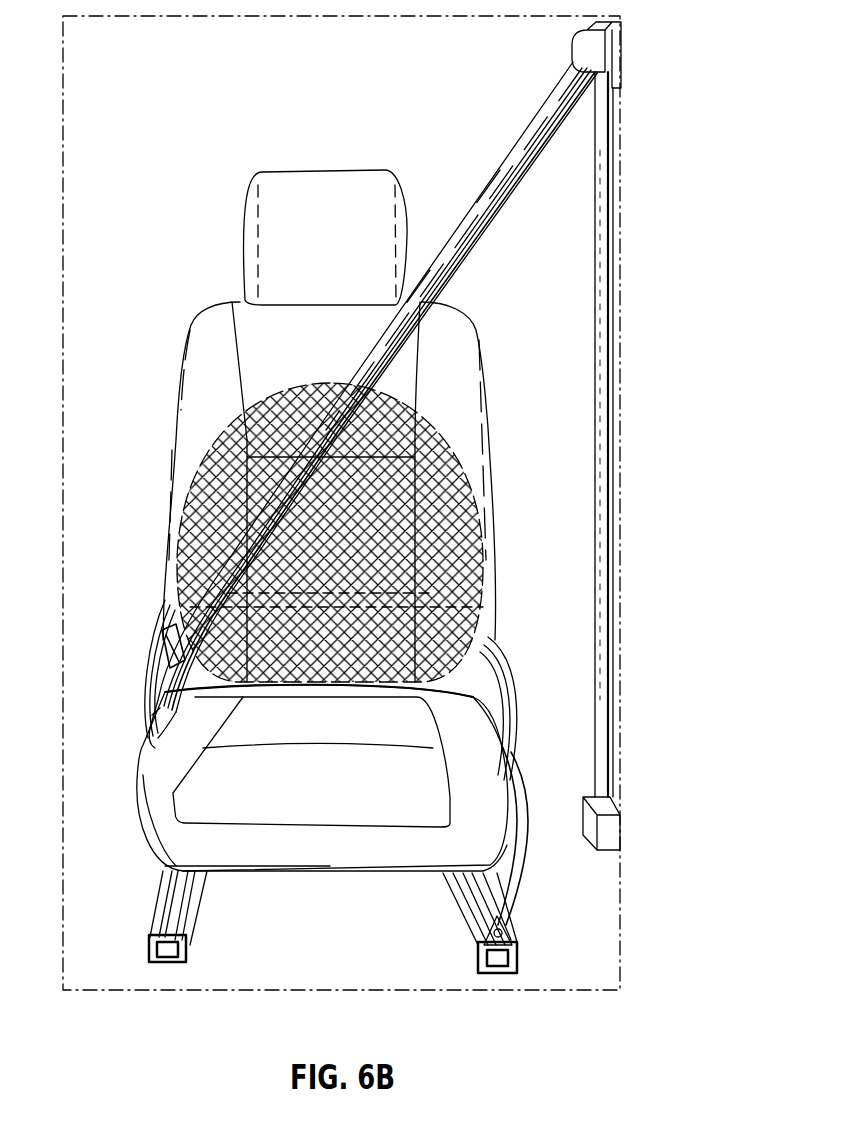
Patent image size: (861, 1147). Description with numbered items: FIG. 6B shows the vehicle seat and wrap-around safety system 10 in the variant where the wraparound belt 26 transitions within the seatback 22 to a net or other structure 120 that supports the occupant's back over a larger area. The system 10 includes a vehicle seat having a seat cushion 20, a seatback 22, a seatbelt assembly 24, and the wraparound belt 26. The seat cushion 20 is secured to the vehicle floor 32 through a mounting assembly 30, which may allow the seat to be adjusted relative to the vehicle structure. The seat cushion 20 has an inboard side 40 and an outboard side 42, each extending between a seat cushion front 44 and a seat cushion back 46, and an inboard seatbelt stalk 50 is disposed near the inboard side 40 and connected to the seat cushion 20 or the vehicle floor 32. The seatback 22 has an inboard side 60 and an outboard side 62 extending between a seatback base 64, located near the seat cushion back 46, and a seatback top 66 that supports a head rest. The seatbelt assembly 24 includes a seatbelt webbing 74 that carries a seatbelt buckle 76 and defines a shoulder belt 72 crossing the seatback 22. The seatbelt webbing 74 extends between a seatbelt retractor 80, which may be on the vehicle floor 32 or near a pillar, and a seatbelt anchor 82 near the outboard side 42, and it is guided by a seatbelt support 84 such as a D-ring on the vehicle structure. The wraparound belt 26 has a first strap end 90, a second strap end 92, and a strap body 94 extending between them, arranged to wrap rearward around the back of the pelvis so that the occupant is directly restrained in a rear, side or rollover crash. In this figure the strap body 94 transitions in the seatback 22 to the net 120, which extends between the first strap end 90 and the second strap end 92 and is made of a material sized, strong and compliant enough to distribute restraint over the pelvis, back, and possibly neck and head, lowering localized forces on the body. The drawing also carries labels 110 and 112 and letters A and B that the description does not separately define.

The vehicle seat and wrap-around safety system 10 is at (262, 130).
The seat cushion 20 is at (133, 829).
The seatback 22 is at (162, 367).
The seatbelt assembly 24 is at (530, 122).
The wraparound belt 26 is at (144, 651).
The mounting assembly 30 is at (148, 951).
The vehicle floor 32 is at (525, 970).
The inboard side 40 is at (142, 748).
The outboard side 42 is at (512, 772).
The seat cushion front 44 is at (297, 855).
The seat cushion back 46 is at (298, 697).
The inboard seatbelt stalk 50 is at (156, 632).
The inboard side 60 is at (166, 510).
The outboard side 62 is at (486, 378).
The seatback base 64 is at (320, 680).
The seatback top 66 is at (235, 305).
The shoulder belt 72 is at (489, 209).
The seatbelt webbing 74 is at (512, 175).
The seatbelt buckle 76 is at (222, 655).
The seatbelt retractor 80 is at (612, 828).
The seatbelt anchor 82 is at (478, 912).
The seatbelt support 84 is at (605, 58).
The first strap end 90 is at (148, 682).
The second strap end 92 is at (518, 675).
The strap body 94 is at (340, 560).
The rail bracket 110 is at (452, 873).
The rail foot 112 is at (483, 973).
The net or other structure 120 is at (470, 570).
The point A is at (148, 718).
The point B is at (500, 746).